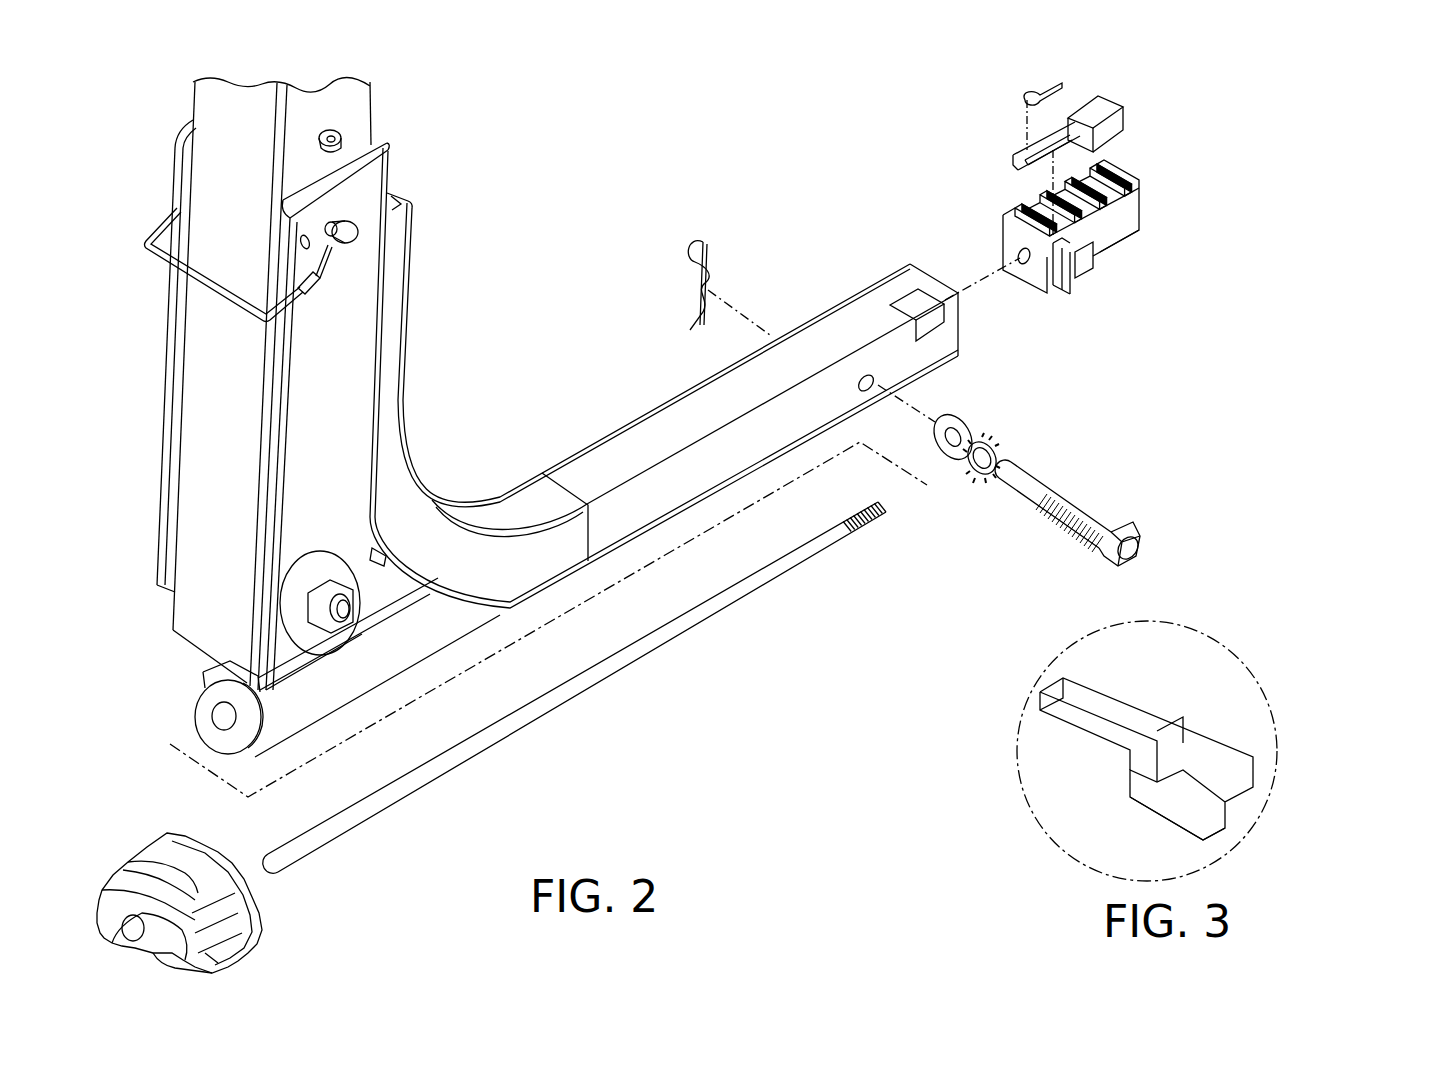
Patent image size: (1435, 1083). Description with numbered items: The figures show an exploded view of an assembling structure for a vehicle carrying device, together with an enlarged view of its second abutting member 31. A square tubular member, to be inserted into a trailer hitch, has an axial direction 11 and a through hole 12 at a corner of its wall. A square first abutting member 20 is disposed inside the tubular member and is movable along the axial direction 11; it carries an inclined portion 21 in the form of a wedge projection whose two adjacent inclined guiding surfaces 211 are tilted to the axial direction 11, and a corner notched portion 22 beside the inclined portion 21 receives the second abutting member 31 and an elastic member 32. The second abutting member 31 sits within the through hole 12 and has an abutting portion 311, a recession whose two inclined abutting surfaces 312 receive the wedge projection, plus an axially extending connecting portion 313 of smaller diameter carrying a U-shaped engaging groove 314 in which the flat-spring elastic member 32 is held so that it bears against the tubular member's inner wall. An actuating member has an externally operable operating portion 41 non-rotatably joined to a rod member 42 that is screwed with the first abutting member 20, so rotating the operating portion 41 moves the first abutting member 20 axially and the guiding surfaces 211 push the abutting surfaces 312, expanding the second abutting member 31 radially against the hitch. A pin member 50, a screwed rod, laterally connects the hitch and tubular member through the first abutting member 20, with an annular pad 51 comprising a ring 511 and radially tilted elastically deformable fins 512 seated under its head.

In FIG. 2, the axial direction 11 is at (980, 282).
In FIG. 2, the through hole 12 is at (903, 303).
In FIG. 2, the first abutting member 20 is at (1119, 269).
In FIG. 2, the inclined portion 21 is at (1119, 220).
In FIG. 2, the inclined guiding surfaces 211 is at (1123, 187).
In FIG. 2, the notched portion 22 is at (1073, 240).
In FIG. 2, the second abutting member 31 is at (1062, 122).
In FIG. 3, the abutting portion 311 is at (1230, 767).
In FIG. 3, the inclined abutting surfaces 312 is at (1220, 807).
In FIG. 3, the connecting portion 313 is at (1087, 732).
In FIG. 2, the engaging groove 314 is at (1030, 143).
In FIG. 2, the elastic member 32 is at (1027, 97).
In FIG. 2, the operating portion 41 is at (150, 867).
In FIG. 2, the rod member 42 is at (512, 725).
In FIG. 2, the pin member 50 is at (1085, 505).
In FIG. 2, the annular pad 51 is at (978, 506).
In FIG. 2, the ring 511 is at (988, 470).
In FIG. 2, the fins 512 is at (980, 468).